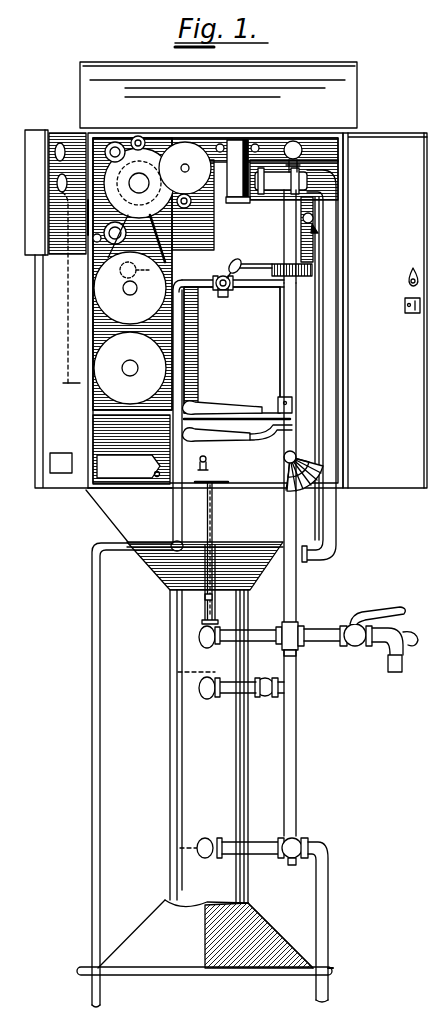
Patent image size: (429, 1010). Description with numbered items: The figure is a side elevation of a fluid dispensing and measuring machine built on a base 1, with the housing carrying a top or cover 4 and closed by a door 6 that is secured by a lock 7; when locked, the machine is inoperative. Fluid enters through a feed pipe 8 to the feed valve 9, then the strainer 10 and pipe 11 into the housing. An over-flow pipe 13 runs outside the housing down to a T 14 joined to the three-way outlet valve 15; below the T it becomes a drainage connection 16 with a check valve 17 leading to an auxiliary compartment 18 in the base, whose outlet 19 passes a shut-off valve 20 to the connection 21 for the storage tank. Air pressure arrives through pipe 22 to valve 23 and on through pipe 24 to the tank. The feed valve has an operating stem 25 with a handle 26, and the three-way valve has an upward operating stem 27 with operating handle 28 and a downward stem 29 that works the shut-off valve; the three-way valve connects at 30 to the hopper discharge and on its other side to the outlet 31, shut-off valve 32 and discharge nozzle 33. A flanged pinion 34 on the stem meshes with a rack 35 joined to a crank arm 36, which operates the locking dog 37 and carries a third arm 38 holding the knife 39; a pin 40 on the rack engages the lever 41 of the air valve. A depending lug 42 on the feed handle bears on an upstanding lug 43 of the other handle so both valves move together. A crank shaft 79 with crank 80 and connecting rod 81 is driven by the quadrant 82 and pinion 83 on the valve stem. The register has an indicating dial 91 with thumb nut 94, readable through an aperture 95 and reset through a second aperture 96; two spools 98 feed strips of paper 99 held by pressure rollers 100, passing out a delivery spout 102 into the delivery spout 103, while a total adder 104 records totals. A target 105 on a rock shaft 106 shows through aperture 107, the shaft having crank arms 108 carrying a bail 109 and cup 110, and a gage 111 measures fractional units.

The base 1 is at (164, 786).
The top or cover 4 is at (357, 80).
The door 6 is at (51, 488).
The lock 7 is at (413, 313).
The feed pipe 8 is at (337, 521).
The feed valve 9 is at (306, 178).
The strainer 10 is at (228, 203).
The pipe 11 is at (240, 140).
The over-flow pipe 13 is at (290, 222).
The T 14 is at (299, 626).
The three-way outlet valve 15 is at (299, 645).
The drainage connection 16 is at (290, 686).
The check valve 17 is at (255, 696).
The auxiliary compartment 18 is at (170, 745).
The outlet 19 is at (255, 842).
The shut-off valve 20 is at (302, 840).
The connection 21 is at (329, 905).
The pipe 22 is at (302, 425).
The valve 23 is at (230, 290).
The pipe 24 is at (185, 362).
The operating stem 25 is at (286, 330).
The handle 26 is at (207, 406).
The operating stem 27 is at (288, 524).
The operating handle 28 is at (238, 442).
The stem 29 is at (294, 748).
The connection 30 is at (264, 630).
The outlet 31 is at (320, 630).
The shut-off valve 32 is at (366, 650).
The discharge nozzle 33 is at (402, 660).
The flanged pinion 34 is at (283, 264).
The rack 35 is at (258, 265).
The crank arm 36 is at (127, 246).
The locking dog 37 is at (159, 238).
The third arm 38 is at (118, 246).
The knife 39 is at (90, 217).
The pin 40 is at (228, 268).
The lever 41 is at (233, 280).
The depending lug 42 is at (247, 420).
The upstanding lug 43 is at (252, 434).
The crank shaft 79 is at (322, 230).
The crank 80 is at (313, 218).
The connecting rod 81 is at (312, 248).
The quadrant 82 is at (326, 472).
The pinion 83 is at (283, 492).
The indicating dial 91 is at (147, 170).
The thumb nut 94 is at (143, 178).
The aperture 95 is at (60, 142).
The second aperture 96 is at (50, 157).
The spools 98 is at (130, 328).
The strips of paper 99 is at (166, 333).
The pressure rollers 100 is at (117, 142).
The delivery spout 102 is at (94, 163).
The delivery spout 103 is at (60, 287).
The total adder 104 is at (188, 158).
The target 105 is at (123, 455).
The rock shaft 106 is at (150, 497).
The aperture 107 is at (60, 452).
The crank arms 108 is at (218, 485).
The bail 109 is at (204, 462).
The cup 110 is at (228, 550).
The gage 111 is at (205, 597).